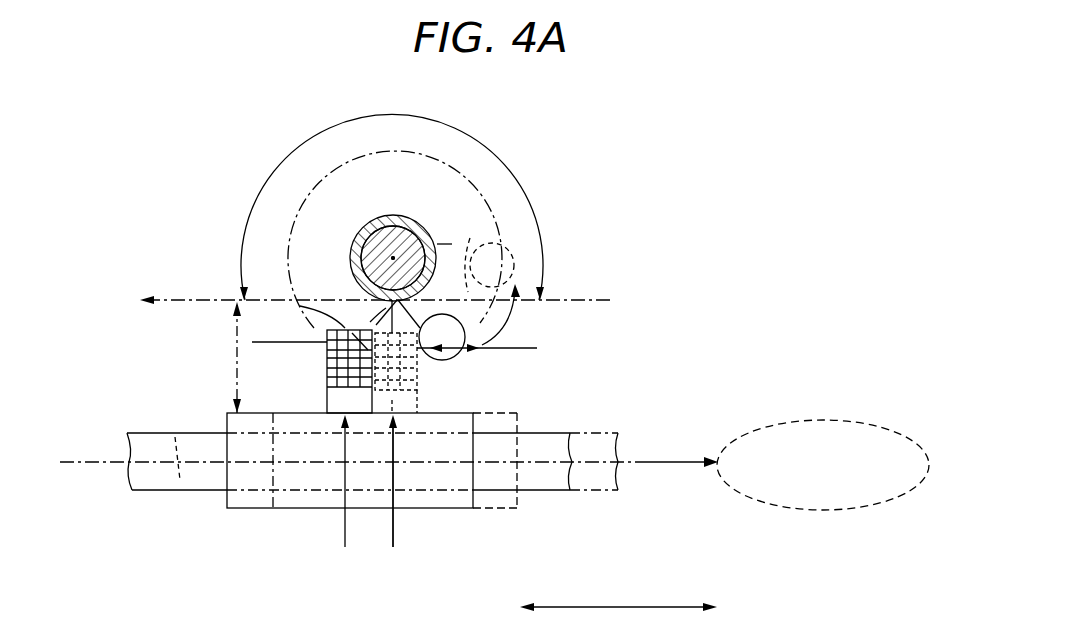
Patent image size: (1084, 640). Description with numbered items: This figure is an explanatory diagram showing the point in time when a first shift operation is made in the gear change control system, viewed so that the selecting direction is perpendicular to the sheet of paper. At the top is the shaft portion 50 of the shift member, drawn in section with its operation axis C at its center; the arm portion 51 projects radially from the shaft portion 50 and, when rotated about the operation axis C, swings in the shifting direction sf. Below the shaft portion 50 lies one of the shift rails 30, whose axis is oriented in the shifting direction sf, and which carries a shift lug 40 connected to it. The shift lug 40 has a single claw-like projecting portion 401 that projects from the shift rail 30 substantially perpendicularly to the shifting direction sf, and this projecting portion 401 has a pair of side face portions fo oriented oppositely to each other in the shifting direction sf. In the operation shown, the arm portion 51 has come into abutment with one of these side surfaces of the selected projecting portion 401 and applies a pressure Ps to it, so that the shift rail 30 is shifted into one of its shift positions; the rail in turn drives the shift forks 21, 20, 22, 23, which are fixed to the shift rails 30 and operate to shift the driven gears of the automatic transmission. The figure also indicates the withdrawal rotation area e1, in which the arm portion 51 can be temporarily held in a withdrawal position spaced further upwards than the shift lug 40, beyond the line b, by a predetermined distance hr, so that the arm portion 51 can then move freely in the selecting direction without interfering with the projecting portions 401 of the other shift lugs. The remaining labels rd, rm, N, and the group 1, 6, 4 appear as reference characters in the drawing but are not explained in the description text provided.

The radius of disc rd is at (312, 185).
The shaft portion 50 is at (352, 251).
The operation axis C is at (415, 236).
The arm portion 51 is at (440, 270).
The withdrawal rotation area e1 is at (540, 225).
The line b is at (553, 297).
The projecting portion 401 is at (348, 330).
The predetermined distance hr is at (232, 353).
The side face portion fo is at (327, 380).
The radius of motor rm is at (507, 330).
The pressure Ps is at (503, 348).
The shift rail 30 is at (167, 433).
The shift lug 40 is at (355, 485).
The apparatus 1 is at (372, 494).
The base 6 is at (372, 494).
The body 4 is at (345, 522).
The normal direction N is at (393, 535).
The shift fork 21 is at (823, 465).
The shift fork 20 is at (823, 465).
The shift fork 22 is at (823, 465).
The shift fork 23 is at (823, 465).
The shifting direction sf is at (628, 606).